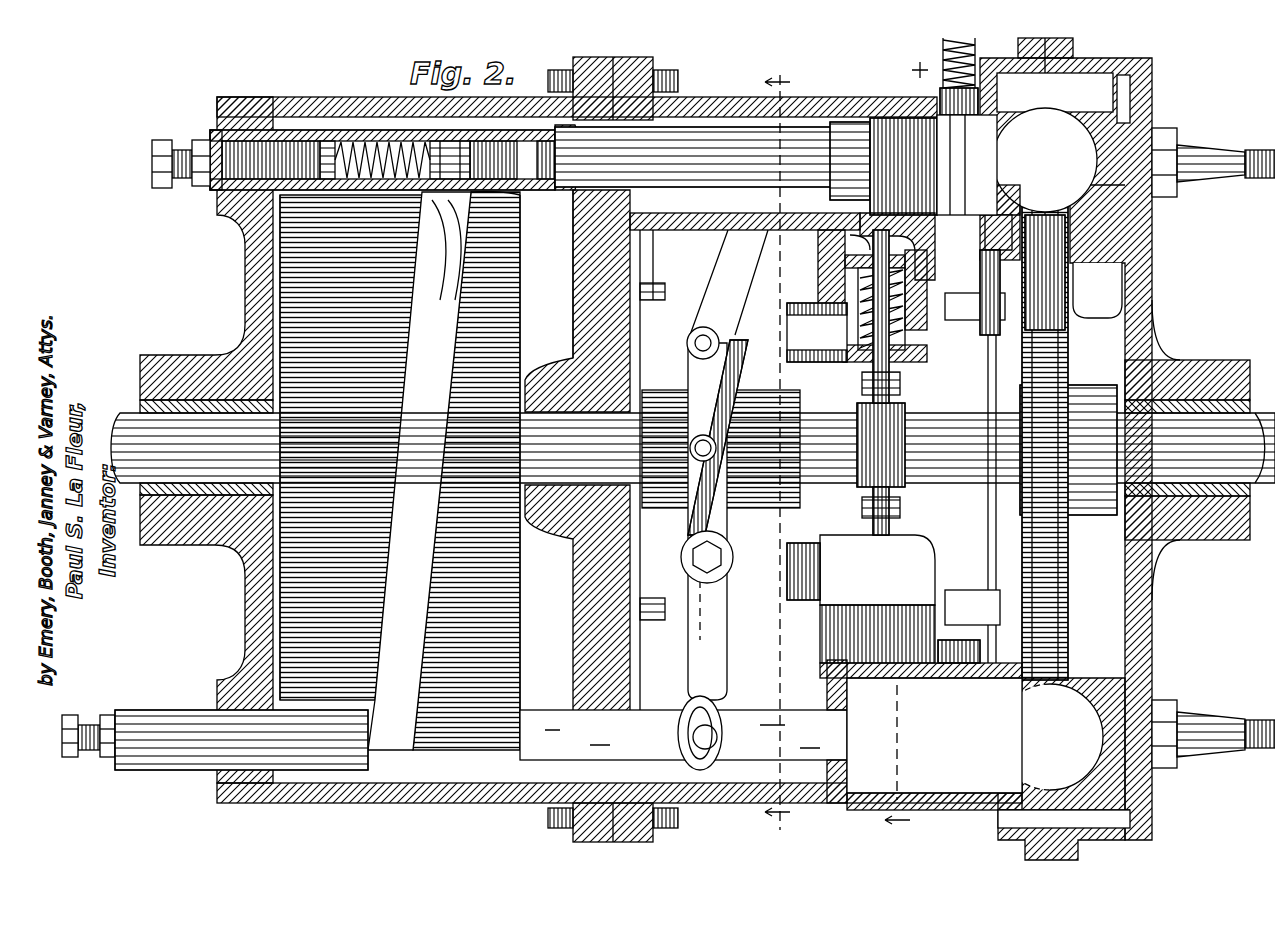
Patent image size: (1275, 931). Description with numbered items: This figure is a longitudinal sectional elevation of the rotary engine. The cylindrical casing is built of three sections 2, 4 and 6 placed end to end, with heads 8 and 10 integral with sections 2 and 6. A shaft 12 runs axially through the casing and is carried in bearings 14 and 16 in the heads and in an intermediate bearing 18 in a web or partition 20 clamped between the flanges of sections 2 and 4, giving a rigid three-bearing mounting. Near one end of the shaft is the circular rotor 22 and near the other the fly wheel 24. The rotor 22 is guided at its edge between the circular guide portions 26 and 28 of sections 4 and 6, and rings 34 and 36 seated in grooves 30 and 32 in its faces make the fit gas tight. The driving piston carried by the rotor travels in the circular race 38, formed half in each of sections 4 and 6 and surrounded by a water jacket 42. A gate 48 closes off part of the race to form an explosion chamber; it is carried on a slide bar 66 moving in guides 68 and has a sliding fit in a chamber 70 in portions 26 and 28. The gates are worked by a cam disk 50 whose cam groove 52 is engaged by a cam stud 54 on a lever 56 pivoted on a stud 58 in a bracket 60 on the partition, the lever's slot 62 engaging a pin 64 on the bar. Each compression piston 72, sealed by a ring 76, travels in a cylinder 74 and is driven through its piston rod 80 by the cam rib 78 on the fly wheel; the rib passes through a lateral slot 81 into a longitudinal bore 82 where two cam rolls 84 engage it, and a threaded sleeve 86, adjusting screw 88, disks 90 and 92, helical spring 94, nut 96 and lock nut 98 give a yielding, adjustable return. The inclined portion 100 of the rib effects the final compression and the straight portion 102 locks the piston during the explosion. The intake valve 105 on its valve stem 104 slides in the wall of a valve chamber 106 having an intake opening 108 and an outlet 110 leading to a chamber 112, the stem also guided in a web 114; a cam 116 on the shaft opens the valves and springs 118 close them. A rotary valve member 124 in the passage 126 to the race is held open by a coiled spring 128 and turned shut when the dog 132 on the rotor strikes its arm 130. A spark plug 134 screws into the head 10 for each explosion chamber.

The casing section 2 is at (378, 97).
The casing section 4 is at (748, 808).
The casing section 6 is at (1090, 848).
The casing head 8 is at (250, 268).
The casing head 10 is at (1138, 262).
The shaft 12 is at (820, 428).
The bearing 14 is at (150, 400).
The bearing 16 is at (1195, 540).
The intermediate bearing 18 is at (555, 515).
The web or partition 20 is at (600, 310).
The circular rotor 22 is at (1055, 340).
The fly wheel 24 is at (300, 330).
The circular guide portion 26 is at (995, 85).
The circular guide portion 28 is at (1085, 185).
The groove 30 is at (1030, 200).
The groove 32 is at (1068, 215).
The ring 34 is at (1022, 268).
The ring 36 is at (1075, 268).
The circular race 38 is at (1062, 125).
The water jacket 42 is at (1130, 100).
The gate 48 is at (960, 793).
The cam disk 50 is at (735, 437).
The cam groove 52 is at (722, 385).
The cam stud 54 is at (690, 448).
The lever 56 is at (735, 262).
The stud 58 is at (700, 330).
The bracket 60 is at (668, 285).
The slot 62 is at (688, 725).
The pin 64 is at (715, 735).
The slide bar 66 is at (545, 710).
The guide 68 is at (632, 705).
The chamber 70 is at (860, 793).
The compression piston 72 is at (840, 122).
The cylinder 74 is at (668, 232).
The piston ring 76 is at (880, 118).
The cam rib 78 is at (440, 355).
The piston rod 80 is at (700, 127).
The lateral slot 81 is at (500, 225).
The longitudinal bore 82 is at (480, 141).
The cam roll 84 is at (540, 141).
The internally screw threaded sleeve 86 is at (215, 132).
The adjusting screw 88 is at (182, 180).
The disk 90 is at (325, 141).
The disk 92 is at (435, 141).
The helical spring 94 is at (360, 141).
The nut 96 is at (152, 162).
The lock nut 98 is at (195, 142).
The inclined portion 100 is at (482, 243).
The straight portion 102 is at (495, 190).
The valve stem 104 is at (862, 383).
The valve 105 is at (868, 258).
The valve chamber 106 is at (915, 360).
The intake opening 108 is at (790, 303).
The outlet 110 is at (818, 250).
The chamber 112 is at (840, 232).
The web 114 is at (845, 262).
The cam 116 is at (895, 428).
The spring 118 is at (858, 328).
The rotary valve member 124 is at (965, 140).
The passage 126 is at (940, 135).
The coiled spring 128 is at (1055, 92).
The arm 130 is at (975, 300).
The dog 132 is at (995, 320).
The spark plug 134 is at (1205, 152).